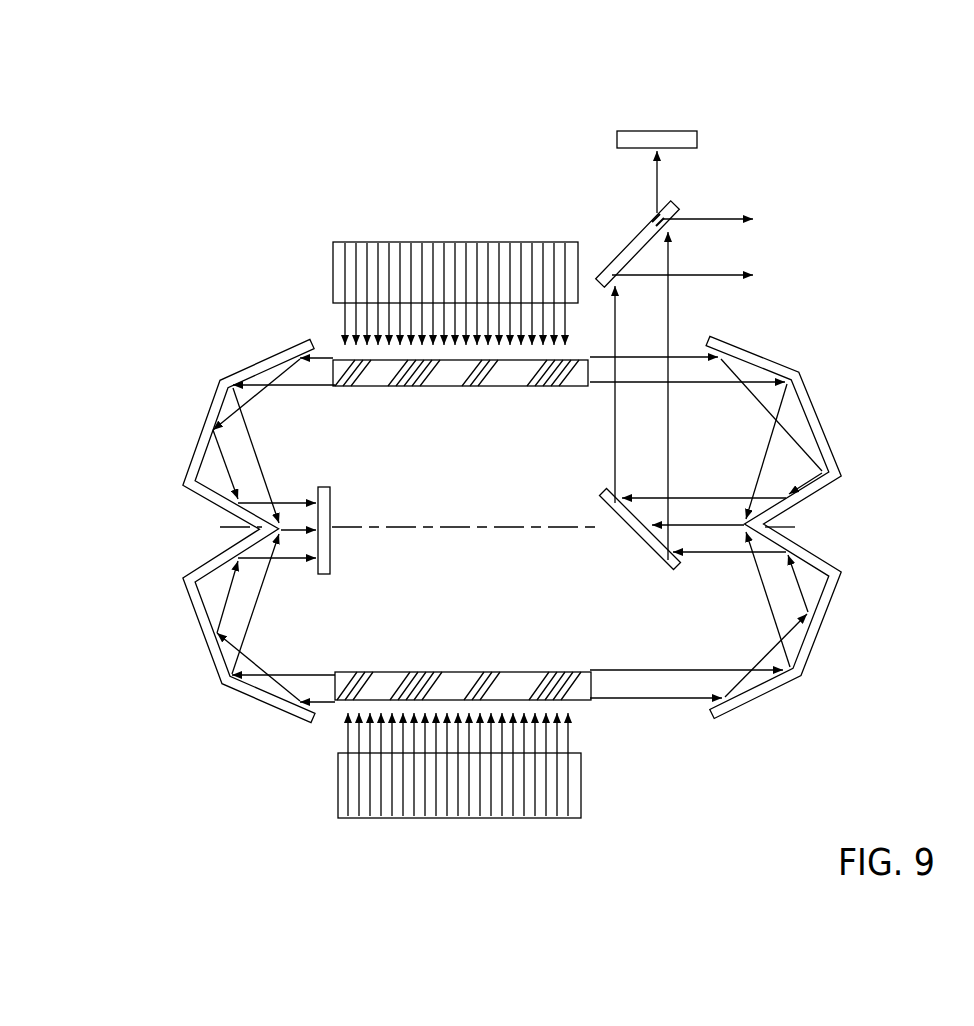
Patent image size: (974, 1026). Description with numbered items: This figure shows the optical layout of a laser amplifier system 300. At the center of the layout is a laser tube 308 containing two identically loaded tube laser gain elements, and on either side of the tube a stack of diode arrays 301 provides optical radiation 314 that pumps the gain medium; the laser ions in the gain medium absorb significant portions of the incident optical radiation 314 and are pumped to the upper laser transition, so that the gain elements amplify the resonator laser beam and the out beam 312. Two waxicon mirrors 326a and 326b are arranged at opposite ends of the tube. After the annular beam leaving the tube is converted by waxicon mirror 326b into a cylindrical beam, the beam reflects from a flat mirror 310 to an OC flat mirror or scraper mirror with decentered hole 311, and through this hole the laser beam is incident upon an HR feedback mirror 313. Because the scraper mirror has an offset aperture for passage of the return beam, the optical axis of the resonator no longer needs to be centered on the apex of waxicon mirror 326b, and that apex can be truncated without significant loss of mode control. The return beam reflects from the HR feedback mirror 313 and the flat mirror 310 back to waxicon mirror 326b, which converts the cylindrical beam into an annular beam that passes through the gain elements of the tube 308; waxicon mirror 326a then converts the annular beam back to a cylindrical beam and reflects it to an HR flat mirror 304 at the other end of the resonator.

The laser amplifier system 300 is at (256, 808).
The stack of diode arrays 301 is at (336, 240).
The HR flat mirror 304 is at (340, 569).
The laser tube 308 is at (345, 356).
The flat mirror 310 is at (632, 544).
The OC flat mirror or scraper mirror with decentered hole 311 is at (632, 238).
The out beam 312 is at (758, 268).
The HR feedback mirror 313 is at (692, 123).
The optical radiation 314 is at (437, 327).
The waxicon mirror 326a is at (226, 541).
The waxicon mirror 326b is at (833, 617).